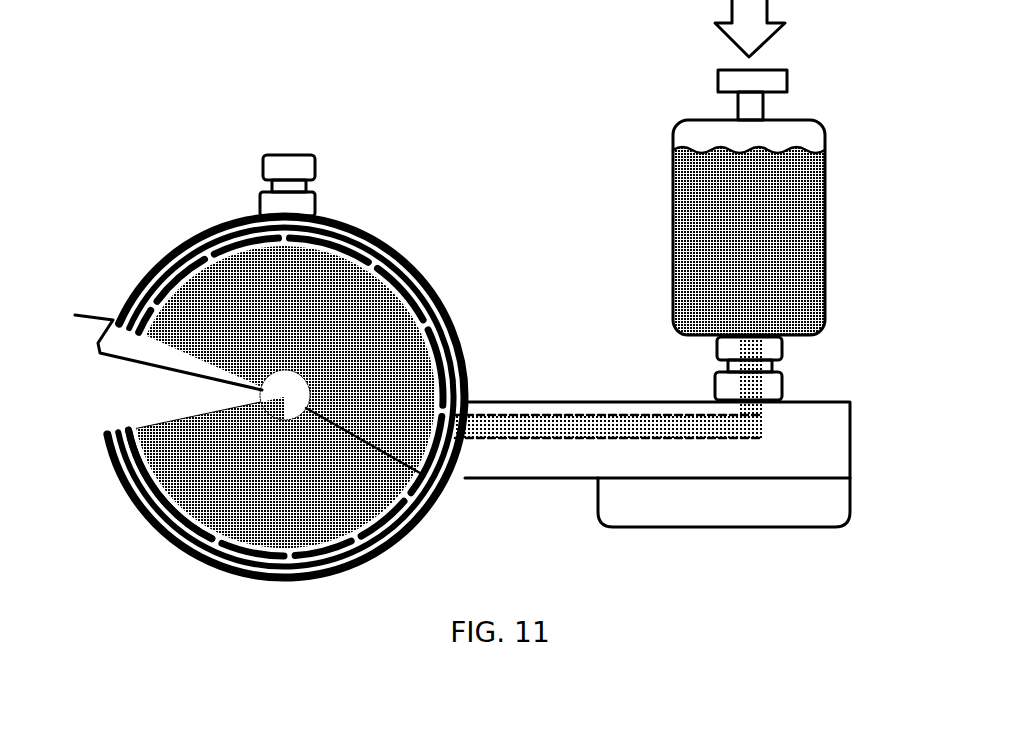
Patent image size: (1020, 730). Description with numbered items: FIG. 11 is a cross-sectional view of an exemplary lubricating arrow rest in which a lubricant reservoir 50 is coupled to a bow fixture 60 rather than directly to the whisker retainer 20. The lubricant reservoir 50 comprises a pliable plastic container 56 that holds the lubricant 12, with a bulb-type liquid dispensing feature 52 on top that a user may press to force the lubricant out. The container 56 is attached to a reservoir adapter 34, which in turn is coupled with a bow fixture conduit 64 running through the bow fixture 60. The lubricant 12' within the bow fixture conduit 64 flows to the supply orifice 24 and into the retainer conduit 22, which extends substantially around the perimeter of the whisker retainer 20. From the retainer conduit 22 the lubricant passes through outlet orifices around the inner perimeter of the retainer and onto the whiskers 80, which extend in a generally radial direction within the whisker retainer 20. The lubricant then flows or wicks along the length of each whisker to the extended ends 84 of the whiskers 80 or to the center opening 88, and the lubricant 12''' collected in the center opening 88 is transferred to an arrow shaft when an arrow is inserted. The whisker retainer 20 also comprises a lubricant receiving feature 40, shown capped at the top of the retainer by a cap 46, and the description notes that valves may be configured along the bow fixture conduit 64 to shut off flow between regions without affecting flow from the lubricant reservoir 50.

The lubricant 12 is at (796, 270).
The lubricant within the bow fixture conduit 12' is at (537, 368).
The lubricant in the center opening 12''' is at (177, 488).
The whisker retainer 20 is at (413, 260).
The retainer conduit 22 is at (215, 227).
The supply orifice 24 is at (132, 292).
The reservoir adapter 34 is at (763, 390).
The lubricant receiving feature 40 is at (302, 205).
The cap 46 is at (287, 155).
The lubricant reservoir 50 is at (787, 135).
The liquid dispensing feature 52 is at (725, 75).
The container 56 is at (787, 208).
The bow fixture 60 is at (712, 497).
The bow fixture conduit 64 is at (653, 433).
The whiskers 80 is at (157, 420).
The extended ends of the whiskers 84 is at (215, 575).
The center opening 88 is at (470, 560).